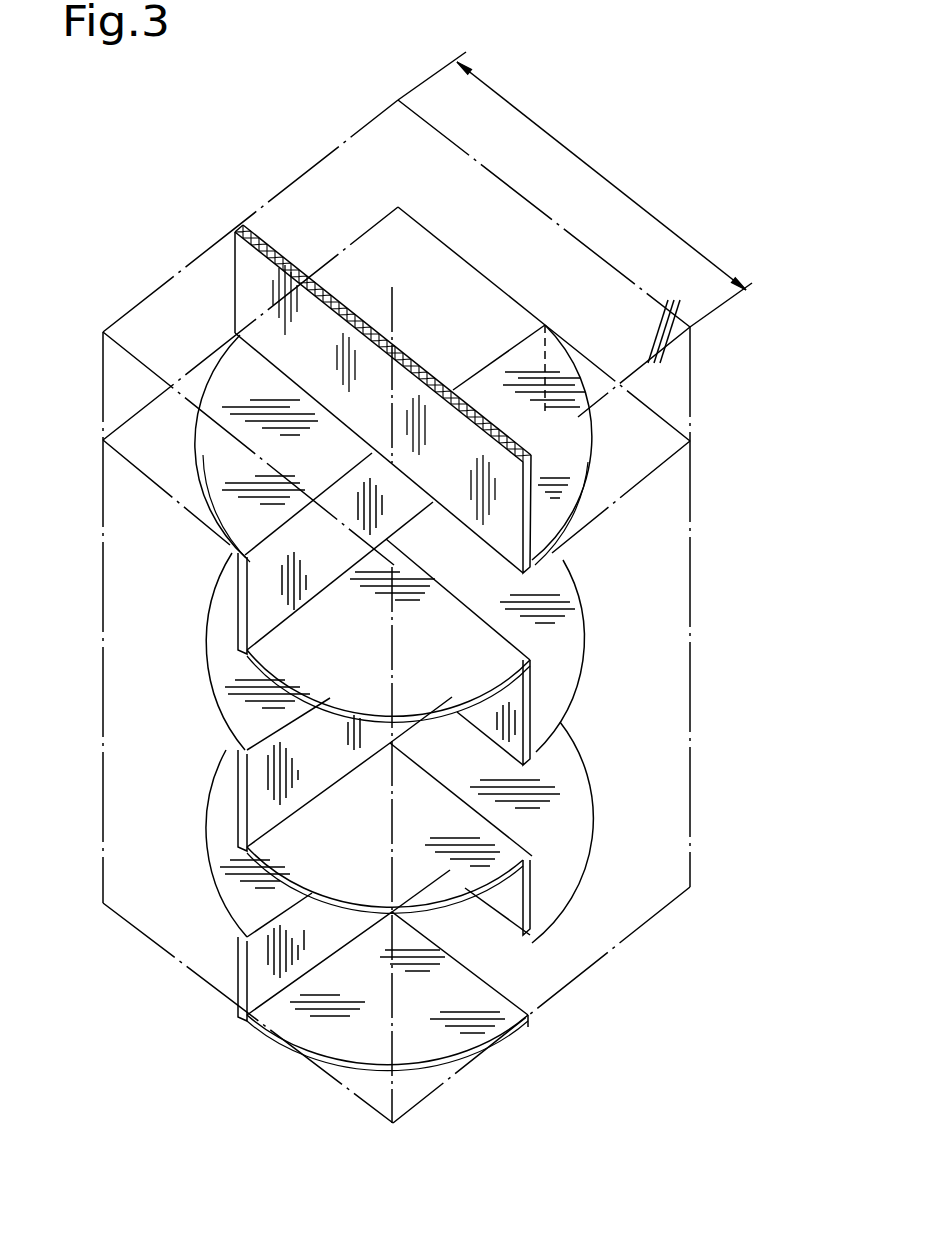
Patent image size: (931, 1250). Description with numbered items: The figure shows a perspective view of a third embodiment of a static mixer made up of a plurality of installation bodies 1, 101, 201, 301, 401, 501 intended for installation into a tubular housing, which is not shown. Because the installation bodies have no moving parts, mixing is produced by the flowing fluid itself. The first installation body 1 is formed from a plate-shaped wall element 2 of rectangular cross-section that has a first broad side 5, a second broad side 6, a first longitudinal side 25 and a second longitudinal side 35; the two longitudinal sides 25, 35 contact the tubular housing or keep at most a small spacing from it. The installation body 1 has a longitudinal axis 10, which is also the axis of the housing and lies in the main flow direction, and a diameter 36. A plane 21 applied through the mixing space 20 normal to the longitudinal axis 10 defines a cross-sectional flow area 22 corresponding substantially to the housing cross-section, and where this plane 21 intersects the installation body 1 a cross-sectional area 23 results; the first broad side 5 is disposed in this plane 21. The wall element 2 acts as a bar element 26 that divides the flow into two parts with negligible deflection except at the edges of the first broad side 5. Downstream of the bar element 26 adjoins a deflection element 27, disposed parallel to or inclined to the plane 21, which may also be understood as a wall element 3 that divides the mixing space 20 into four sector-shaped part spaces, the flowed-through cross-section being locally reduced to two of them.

The installation body 1 is at (255, 268).
The wall element 2 is at (260, 286).
The wall element 3 is at (578, 437).
The first broad side 5 is at (415, 365).
The second broad side 6 is at (267, 366).
The longitudinal axis 10 is at (392, 303).
The mixing space 20 is at (622, 298).
The plane 21 is at (663, 340).
The cross-sectional flow area 22 is at (713, 340).
The cross-sectional area 23 is at (273, 250).
The first longitudinal side 25 is at (553, 553).
The bar element 26 is at (507, 528).
The deflection element 27 is at (565, 477).
The second longitudinal side 35 is at (235, 240).
The diameter 36 is at (567, 147).
The installation body 101 is at (245, 516).
The installation body 201 is at (310, 650).
The installation body 301 is at (273, 772).
The installation body 401 is at (262, 915).
The installation body 501 is at (330, 1025).